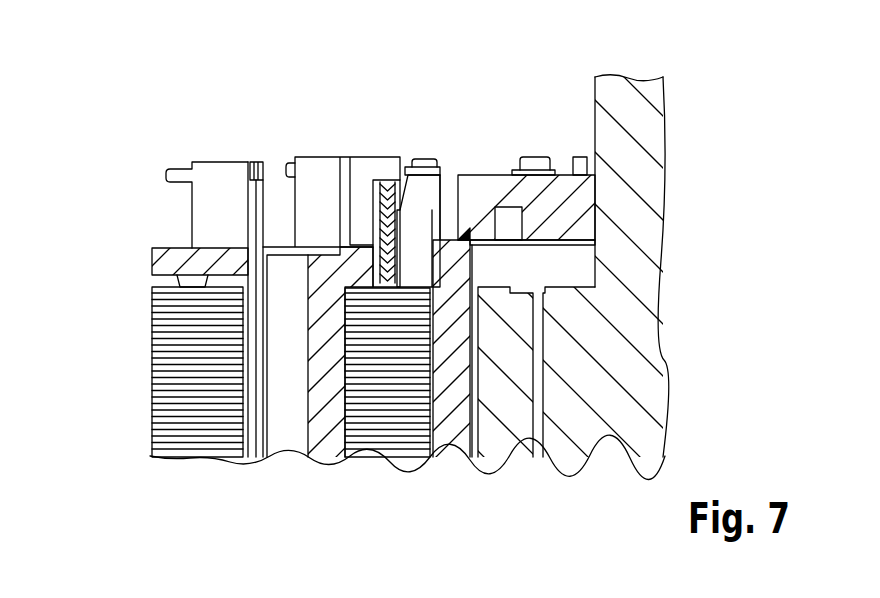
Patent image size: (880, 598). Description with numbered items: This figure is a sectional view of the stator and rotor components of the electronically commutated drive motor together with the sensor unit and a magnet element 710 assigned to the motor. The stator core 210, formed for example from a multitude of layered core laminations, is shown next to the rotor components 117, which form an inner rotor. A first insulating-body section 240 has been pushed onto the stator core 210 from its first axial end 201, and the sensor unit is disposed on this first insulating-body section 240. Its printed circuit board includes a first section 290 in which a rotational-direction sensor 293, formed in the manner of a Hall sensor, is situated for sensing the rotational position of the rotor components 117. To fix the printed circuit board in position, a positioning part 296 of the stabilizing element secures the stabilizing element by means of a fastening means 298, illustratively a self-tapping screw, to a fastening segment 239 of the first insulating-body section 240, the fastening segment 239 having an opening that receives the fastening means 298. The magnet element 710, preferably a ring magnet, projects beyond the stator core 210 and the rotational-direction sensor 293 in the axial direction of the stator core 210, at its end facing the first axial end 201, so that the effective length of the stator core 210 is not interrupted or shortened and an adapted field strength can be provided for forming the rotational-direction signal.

The first axial end 201 is at (575, 92).
The rotor components 117 is at (650, 125).
The magnet element 710 is at (452, 260).
The first section 290 is at (480, 190).
The fastening segment 239 is at (443, 197).
The fastening means 298 is at (418, 166).
The positioning part 296 is at (383, 180).
The rotational-direction sensor 293 is at (403, 255).
The first insulating-body section 240 is at (213, 190).
The stator core 210 is at (396, 327).